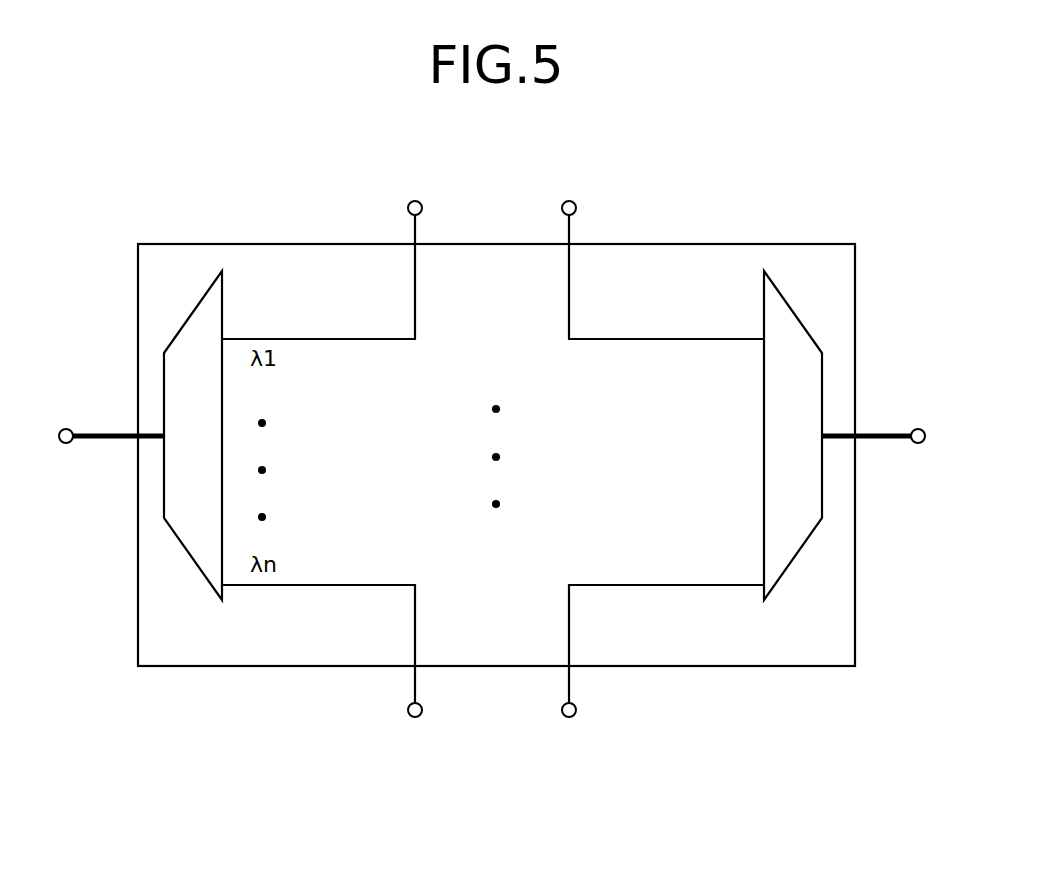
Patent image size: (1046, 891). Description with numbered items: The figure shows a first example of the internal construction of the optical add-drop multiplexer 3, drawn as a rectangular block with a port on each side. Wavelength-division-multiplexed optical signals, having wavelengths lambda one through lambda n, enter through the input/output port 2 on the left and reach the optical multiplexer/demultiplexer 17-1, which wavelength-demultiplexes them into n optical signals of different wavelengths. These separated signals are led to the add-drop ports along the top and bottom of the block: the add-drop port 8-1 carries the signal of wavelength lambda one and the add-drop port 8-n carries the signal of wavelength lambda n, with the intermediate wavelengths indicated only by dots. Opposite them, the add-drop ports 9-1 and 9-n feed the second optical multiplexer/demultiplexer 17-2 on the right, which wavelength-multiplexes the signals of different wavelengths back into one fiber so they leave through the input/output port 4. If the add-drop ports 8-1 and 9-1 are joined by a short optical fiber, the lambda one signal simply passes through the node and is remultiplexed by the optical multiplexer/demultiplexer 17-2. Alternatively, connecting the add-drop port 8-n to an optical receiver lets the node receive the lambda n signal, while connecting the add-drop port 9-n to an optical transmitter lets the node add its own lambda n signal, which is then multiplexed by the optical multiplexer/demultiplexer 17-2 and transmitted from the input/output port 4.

The input/output port 2 is at (67, 428).
The optical add-drop multiplexer 3 is at (725, 244).
The input/output port 4 is at (919, 428).
The add-drop port 8-1 is at (415, 201).
The add-drop port 8-n is at (415, 718).
The add-drop port 9-1 is at (569, 201).
The add-drop port 9-n is at (569, 718).
The optical multiplexer/demultiplexer 17-1 is at (190, 557).
The optical multiplexer/demultiplexer 17-2 is at (800, 555).